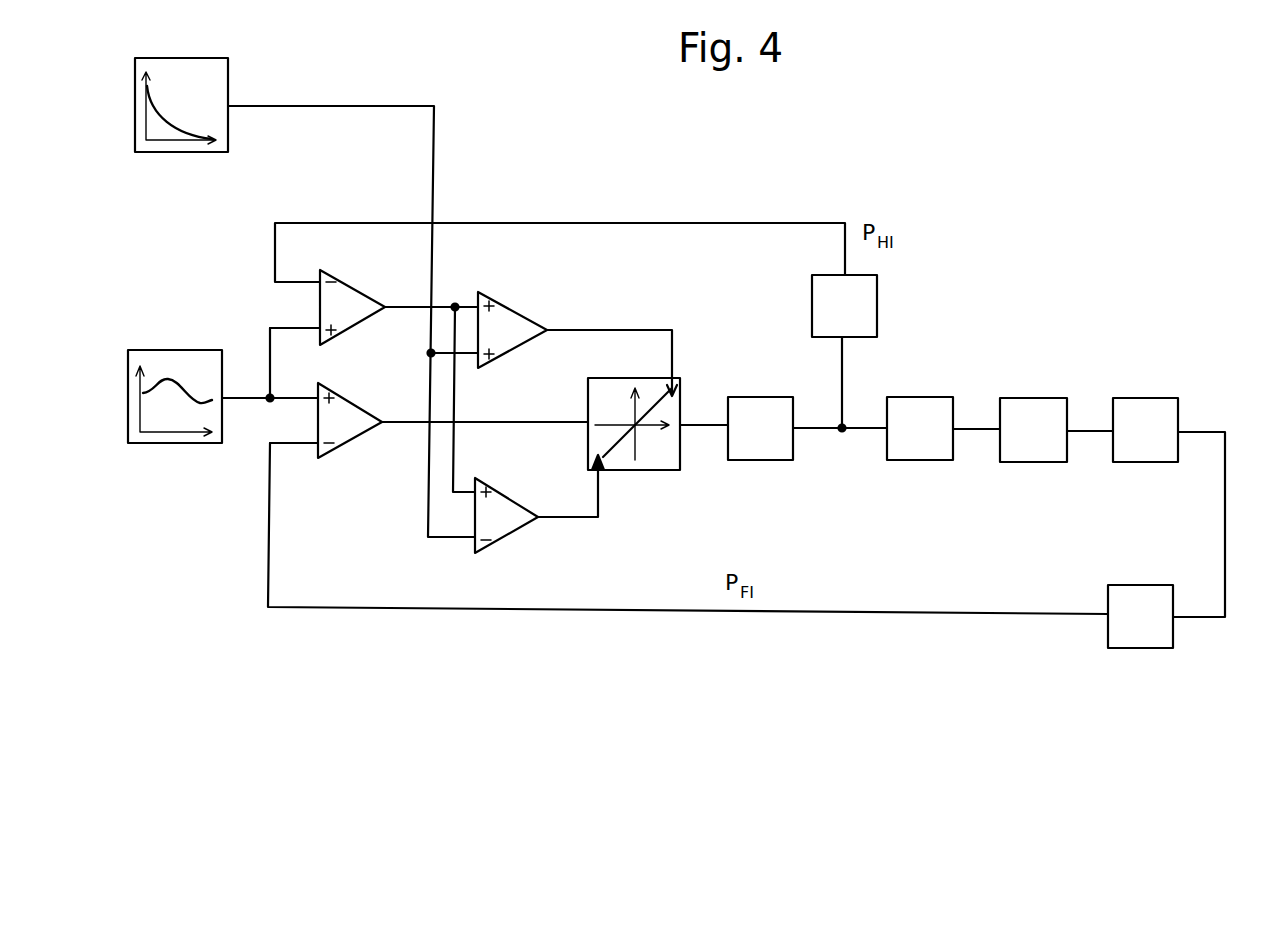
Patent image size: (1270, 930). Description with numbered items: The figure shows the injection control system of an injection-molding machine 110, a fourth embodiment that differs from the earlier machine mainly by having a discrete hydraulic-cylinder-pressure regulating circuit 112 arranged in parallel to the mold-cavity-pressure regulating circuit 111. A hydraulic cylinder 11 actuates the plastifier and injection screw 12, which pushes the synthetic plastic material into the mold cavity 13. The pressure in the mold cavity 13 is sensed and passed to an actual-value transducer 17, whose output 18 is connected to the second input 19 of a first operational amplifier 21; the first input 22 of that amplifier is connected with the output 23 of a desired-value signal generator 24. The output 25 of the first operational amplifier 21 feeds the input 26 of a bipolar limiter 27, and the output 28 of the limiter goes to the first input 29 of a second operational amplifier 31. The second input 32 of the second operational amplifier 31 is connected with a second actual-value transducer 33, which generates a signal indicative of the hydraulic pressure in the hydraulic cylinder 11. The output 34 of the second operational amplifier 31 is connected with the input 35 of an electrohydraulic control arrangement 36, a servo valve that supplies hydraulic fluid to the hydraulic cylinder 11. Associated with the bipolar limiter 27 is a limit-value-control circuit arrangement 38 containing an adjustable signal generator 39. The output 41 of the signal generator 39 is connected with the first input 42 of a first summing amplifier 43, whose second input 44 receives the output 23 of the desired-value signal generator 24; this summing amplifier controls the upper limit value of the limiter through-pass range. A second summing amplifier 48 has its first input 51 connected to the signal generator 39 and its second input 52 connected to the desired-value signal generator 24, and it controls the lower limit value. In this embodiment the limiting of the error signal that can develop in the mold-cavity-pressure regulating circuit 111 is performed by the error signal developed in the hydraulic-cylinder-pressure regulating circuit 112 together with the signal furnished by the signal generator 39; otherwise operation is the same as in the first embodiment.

The hydraulic cylinder 11 is at (912, 410).
The plastifier and injection screw 12 is at (1023, 410).
The mold cavity 13 is at (1137, 410).
The actual-value transducer 17 is at (1138, 600).
The output of actual-value transducer 18 is at (1108, 612).
The second input of first operational amplifier 19 is at (318, 444).
The first operational amplifier 21 is at (340, 412).
The first input of first operational amplifier 22 is at (318, 398).
The output of desired-value signal generator 23 is at (224, 396).
The desired-value signal generator 24 is at (166, 353).
The output of first operational amplifier 25 is at (382, 422).
The input of bipolar limiter 26 is at (612, 407).
The bipolar limiter 27 is at (636, 388).
The output of bipolar limiter 28 is at (682, 434).
The first input of second operational amplifier 29 is at (318, 330).
The second operational amplifier 31 is at (345, 300).
The second input of second operational amplifier 32 is at (320, 280).
The second actual-value transducer 33 is at (864, 302).
The output of second operational amplifier 34 is at (385, 308).
The input of electrohydraulic control arrangement 35 is at (728, 424).
The electrohydraulic control arrangement 36 is at (772, 370).
The limit-value-control circuit arrangement 38 is at (553, 332).
The adjustable signal generator 39 is at (186, 65).
The output of signal generator 41 is at (232, 104).
The first input of first summing amplifier 42 is at (478, 358).
The first summing amplifier 43 is at (505, 320).
The second input of first summing amplifier 44 is at (478, 305).
The second summing amplifier 48 is at (505, 508).
The first input of second summing amplifier 51 is at (474, 540).
The second input of second summing amplifier 52 is at (472, 490).
The injection-molding machine 110 is at (780, 192).
The mold-cavity-pressure regulating circuit 111 is at (265, 557).
The hydraulic-cylinder-pressure regulating circuit 112 is at (598, 222).